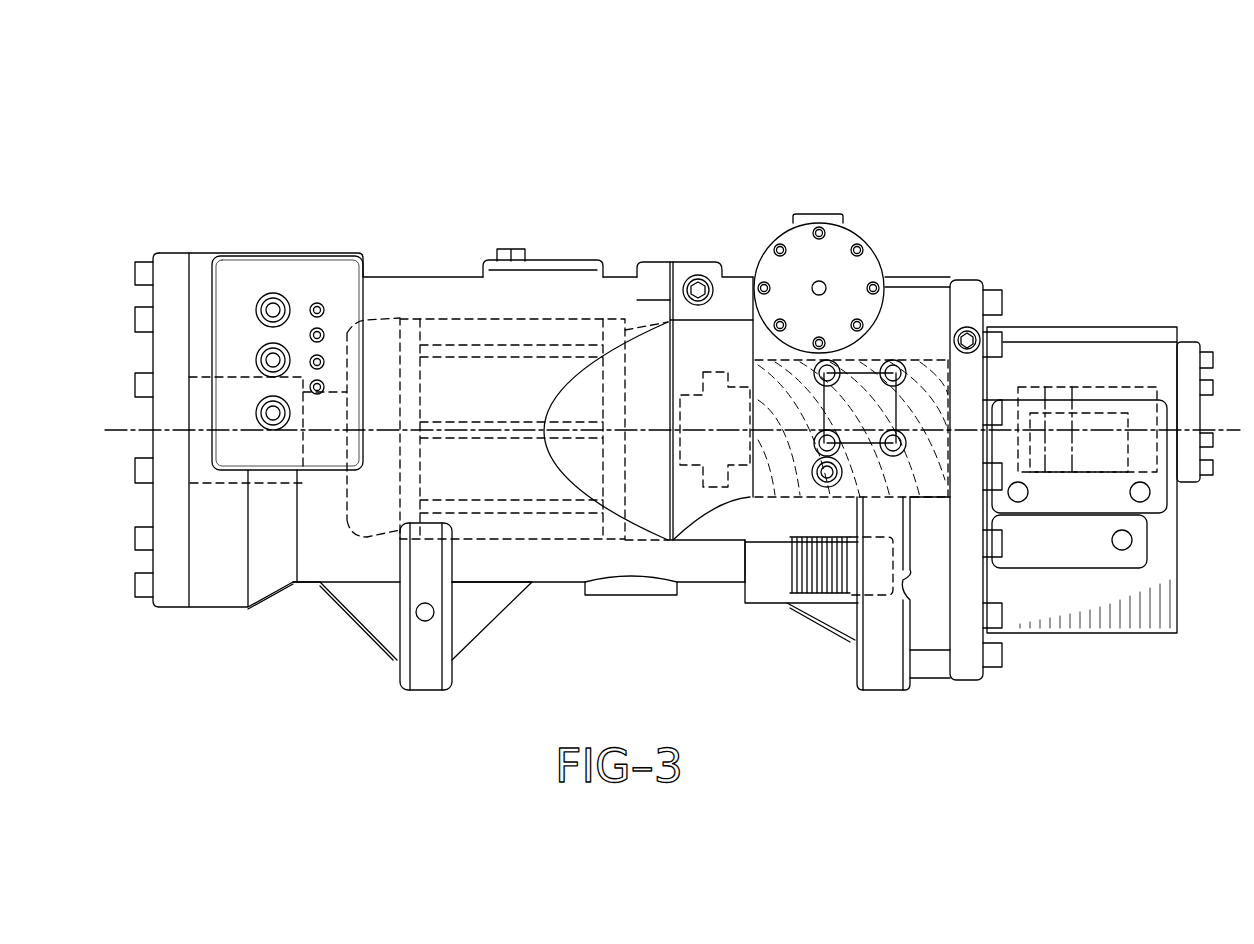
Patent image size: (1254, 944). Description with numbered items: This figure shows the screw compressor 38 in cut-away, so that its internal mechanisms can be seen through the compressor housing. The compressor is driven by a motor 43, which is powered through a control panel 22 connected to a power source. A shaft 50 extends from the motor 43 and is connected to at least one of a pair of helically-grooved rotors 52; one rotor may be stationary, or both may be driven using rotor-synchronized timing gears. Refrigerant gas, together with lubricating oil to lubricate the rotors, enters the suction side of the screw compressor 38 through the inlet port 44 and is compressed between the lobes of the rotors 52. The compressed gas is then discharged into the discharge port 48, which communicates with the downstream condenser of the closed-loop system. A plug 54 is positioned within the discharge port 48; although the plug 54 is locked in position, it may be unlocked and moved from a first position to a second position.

The screw compressor 38 is at (284, 148).
The motor 43 is at (453, 330).
The shaft 50 is at (693, 417).
The inlet port 44 is at (827, 252).
The helically-grooved rotors 52 is at (878, 375).
The plug 54 is at (790, 560).
The discharge port 48 is at (873, 593).
The control panel 22 is at (1153, 493).